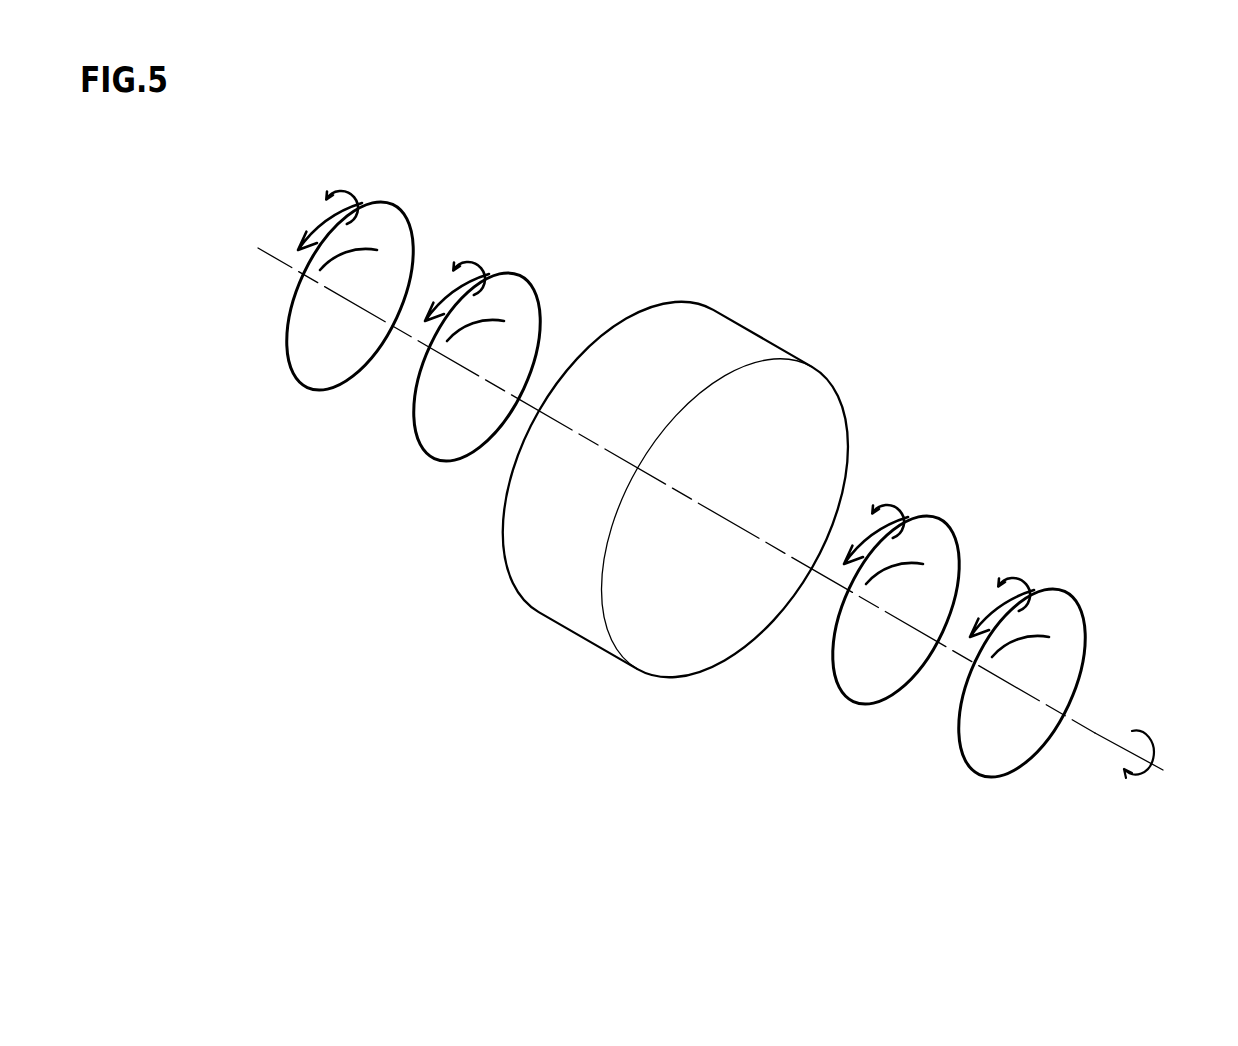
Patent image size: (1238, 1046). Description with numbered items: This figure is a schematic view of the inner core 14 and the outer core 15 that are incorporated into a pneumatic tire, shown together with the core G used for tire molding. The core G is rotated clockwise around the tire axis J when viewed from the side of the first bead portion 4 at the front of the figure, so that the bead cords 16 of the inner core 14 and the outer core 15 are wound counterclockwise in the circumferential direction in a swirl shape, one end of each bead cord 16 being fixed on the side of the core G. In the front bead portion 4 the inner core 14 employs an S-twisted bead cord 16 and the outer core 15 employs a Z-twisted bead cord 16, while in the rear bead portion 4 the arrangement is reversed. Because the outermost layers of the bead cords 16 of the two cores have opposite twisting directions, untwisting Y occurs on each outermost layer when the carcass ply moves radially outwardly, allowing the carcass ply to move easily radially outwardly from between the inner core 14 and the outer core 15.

The bead portion 4 is at (315, 437).
The inner core 14 is at (423, 460).
The outer core 15 is at (288, 373).
The bead cord 16 is at (402, 210).
The core for tire molding G is at (746, 326).
The untwisting Y is at (343, 177).
The tire axis J is at (1096, 733).